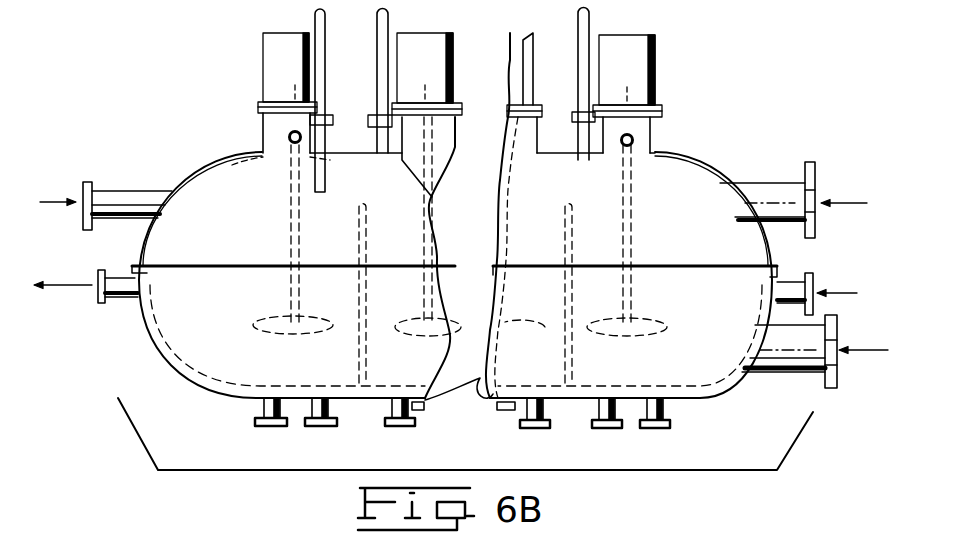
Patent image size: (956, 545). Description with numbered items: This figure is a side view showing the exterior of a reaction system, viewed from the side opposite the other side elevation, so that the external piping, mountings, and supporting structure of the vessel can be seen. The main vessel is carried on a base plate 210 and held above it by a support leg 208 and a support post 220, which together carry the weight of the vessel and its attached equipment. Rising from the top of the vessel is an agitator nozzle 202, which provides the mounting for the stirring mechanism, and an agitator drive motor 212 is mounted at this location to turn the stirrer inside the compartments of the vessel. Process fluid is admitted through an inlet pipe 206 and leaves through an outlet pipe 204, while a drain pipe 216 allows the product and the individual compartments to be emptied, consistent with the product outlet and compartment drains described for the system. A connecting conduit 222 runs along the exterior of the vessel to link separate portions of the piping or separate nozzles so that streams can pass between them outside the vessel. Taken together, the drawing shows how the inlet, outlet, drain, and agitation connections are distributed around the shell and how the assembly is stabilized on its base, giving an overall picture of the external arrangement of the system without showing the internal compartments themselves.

The agitator nozzle 202 is at (263, 133).
The outlet pipe 204 is at (770, 183).
The inlet pipe 206 is at (130, 195).
The support leg 208 is at (262, 407).
The base plate 210 is at (330, 423).
The agitator drive motor 212 is at (291, 135).
The drain pipe 216 is at (116, 278).
The support post 220 is at (388, 26).
The connecting conduit 222 is at (487, 372).